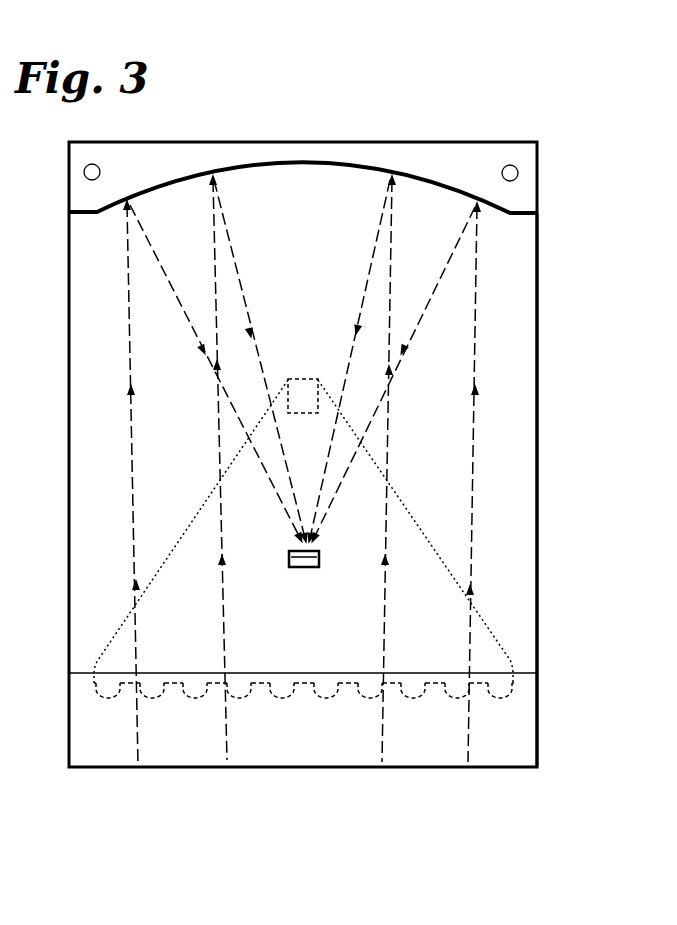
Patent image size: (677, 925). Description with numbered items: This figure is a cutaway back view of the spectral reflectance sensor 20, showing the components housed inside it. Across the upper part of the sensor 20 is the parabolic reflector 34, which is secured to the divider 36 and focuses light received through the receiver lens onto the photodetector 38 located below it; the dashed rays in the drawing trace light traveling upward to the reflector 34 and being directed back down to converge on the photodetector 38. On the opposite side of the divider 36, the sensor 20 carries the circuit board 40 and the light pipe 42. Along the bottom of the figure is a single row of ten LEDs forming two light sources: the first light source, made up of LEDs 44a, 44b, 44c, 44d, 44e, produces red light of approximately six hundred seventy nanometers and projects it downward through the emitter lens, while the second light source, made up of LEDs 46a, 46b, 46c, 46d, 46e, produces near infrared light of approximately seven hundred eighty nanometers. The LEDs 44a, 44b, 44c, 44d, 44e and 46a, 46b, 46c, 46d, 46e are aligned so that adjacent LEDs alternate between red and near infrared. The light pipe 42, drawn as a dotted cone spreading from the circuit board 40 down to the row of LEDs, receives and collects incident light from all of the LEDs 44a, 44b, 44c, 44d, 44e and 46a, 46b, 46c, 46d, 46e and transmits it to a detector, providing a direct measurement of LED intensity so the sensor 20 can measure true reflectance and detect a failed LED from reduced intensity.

The reflectance sensor 20 is at (552, 150).
The parabolic reflector 34 is at (420, 163).
The divider 36 is at (538, 268).
The photodetector 38 is at (299, 567).
The circuit board 40 is at (305, 379).
The light pipe 42 is at (480, 617).
The LED 44a is at (108, 698).
The LED 44b is at (195, 698).
The LED 44c is at (282, 698).
The LED 44d is at (370, 698).
The LED 44e is at (457, 698).
The LED 46a is at (152, 698).
The LED 46b is at (239, 698).
The LED 46c is at (326, 698).
The LED 46d is at (413, 698).
The LED 46e is at (500, 698).